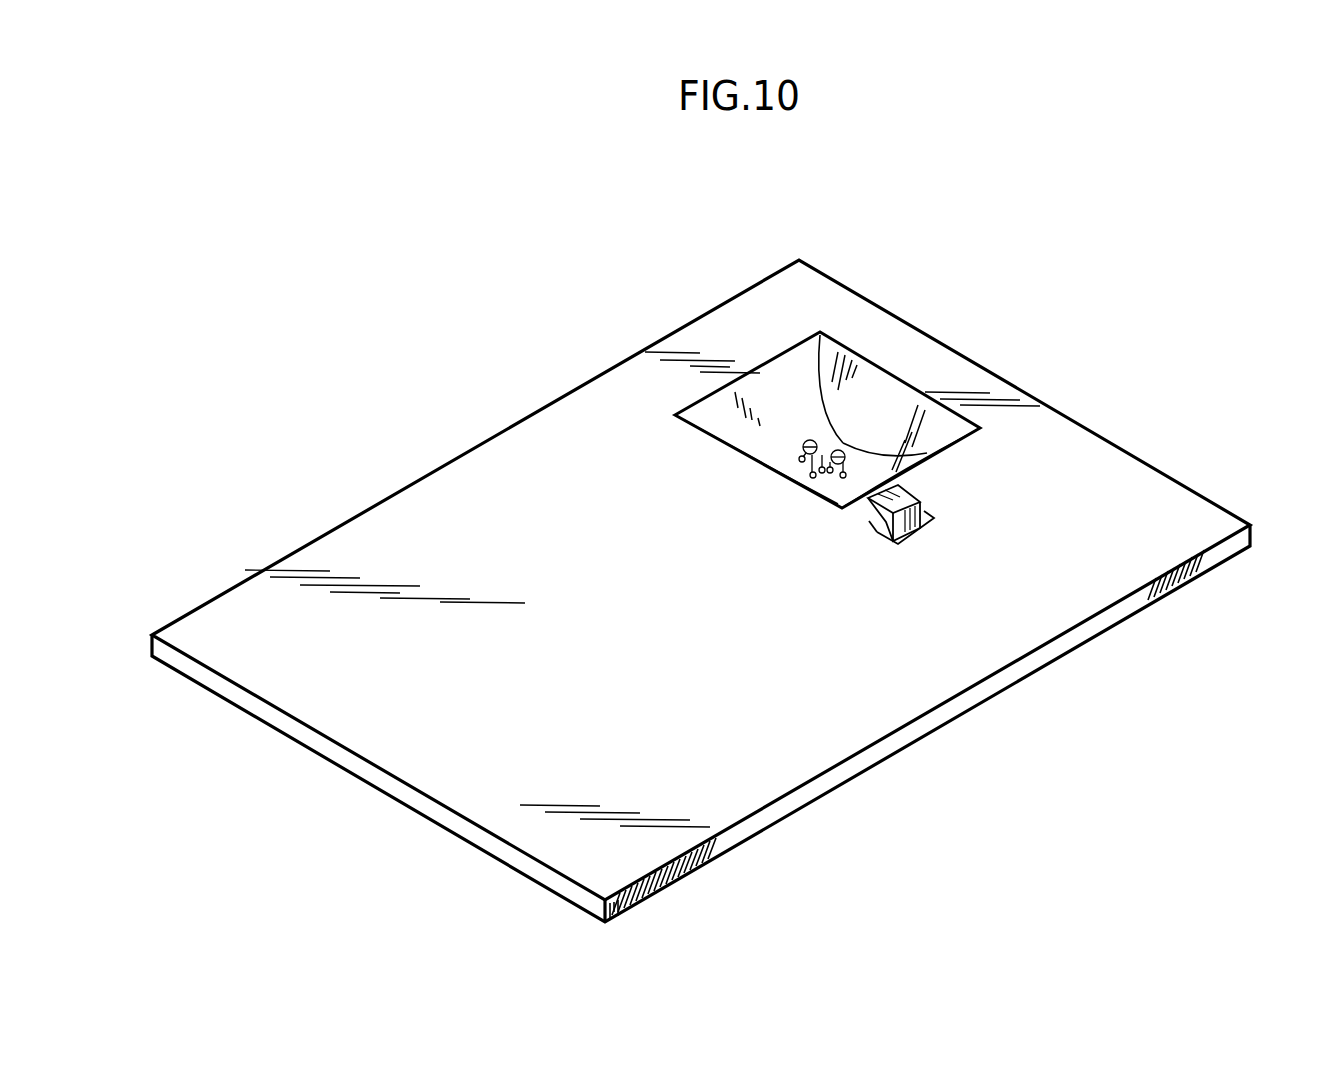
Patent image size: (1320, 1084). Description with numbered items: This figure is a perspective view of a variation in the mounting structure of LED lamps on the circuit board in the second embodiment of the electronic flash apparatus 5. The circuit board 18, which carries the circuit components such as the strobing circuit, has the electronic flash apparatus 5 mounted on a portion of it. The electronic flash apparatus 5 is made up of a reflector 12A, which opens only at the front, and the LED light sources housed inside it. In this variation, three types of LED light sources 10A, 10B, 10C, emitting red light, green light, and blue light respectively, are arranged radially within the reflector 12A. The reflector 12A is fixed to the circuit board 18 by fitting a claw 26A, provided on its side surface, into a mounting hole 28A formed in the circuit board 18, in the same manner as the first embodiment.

The electronic flash apparatus 5 is at (669, 391).
The circuit board 18 is at (497, 472).
The reflector 12A is at (767, 390).
The LED lamp 10A is at (845, 450).
The LED light source 10B is at (808, 468).
The LED light source 10C is at (806, 444).
The claw 26A is at (927, 521).
The mounting hole 28A is at (898, 545).